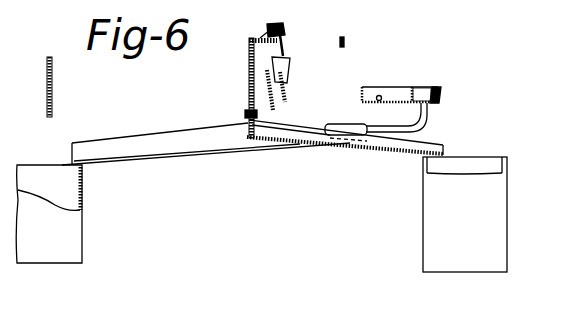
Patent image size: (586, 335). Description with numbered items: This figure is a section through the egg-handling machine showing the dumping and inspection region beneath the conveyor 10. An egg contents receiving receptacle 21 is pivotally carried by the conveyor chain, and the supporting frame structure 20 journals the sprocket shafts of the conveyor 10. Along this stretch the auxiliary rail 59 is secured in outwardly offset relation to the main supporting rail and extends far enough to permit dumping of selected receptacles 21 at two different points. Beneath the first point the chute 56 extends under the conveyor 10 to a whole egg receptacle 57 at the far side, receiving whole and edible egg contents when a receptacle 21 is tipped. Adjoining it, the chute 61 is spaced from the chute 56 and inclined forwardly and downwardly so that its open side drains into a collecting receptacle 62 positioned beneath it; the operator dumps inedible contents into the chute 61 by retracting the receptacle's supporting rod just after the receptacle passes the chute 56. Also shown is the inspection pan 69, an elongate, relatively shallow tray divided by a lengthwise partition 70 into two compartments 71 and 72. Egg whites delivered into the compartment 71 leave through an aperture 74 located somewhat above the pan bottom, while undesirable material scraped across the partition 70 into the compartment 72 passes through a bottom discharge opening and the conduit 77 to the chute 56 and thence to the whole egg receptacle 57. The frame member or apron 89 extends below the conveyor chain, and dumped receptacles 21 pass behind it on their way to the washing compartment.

The conveyor 10 is at (272, 27).
The supporting frame structure 20 is at (52, 93).
The egg contents receiving receptacle 21 is at (290, 70).
The chute 56 is at (143, 138).
The whole egg receptacle 57 is at (82, 236).
The auxiliary rail 59 is at (346, 40).
The chute 61 is at (277, 138).
The collecting receptacle 62 is at (498, 200).
The inspection pan 69 is at (441, 97).
The partition 70 is at (418, 90).
The compartment 71 is at (411, 88).
The compartment 72 is at (438, 89).
The aperture 74 is at (375, 102).
The conduit 77 is at (428, 121).
The frame member or apron 89 is at (249, 83).